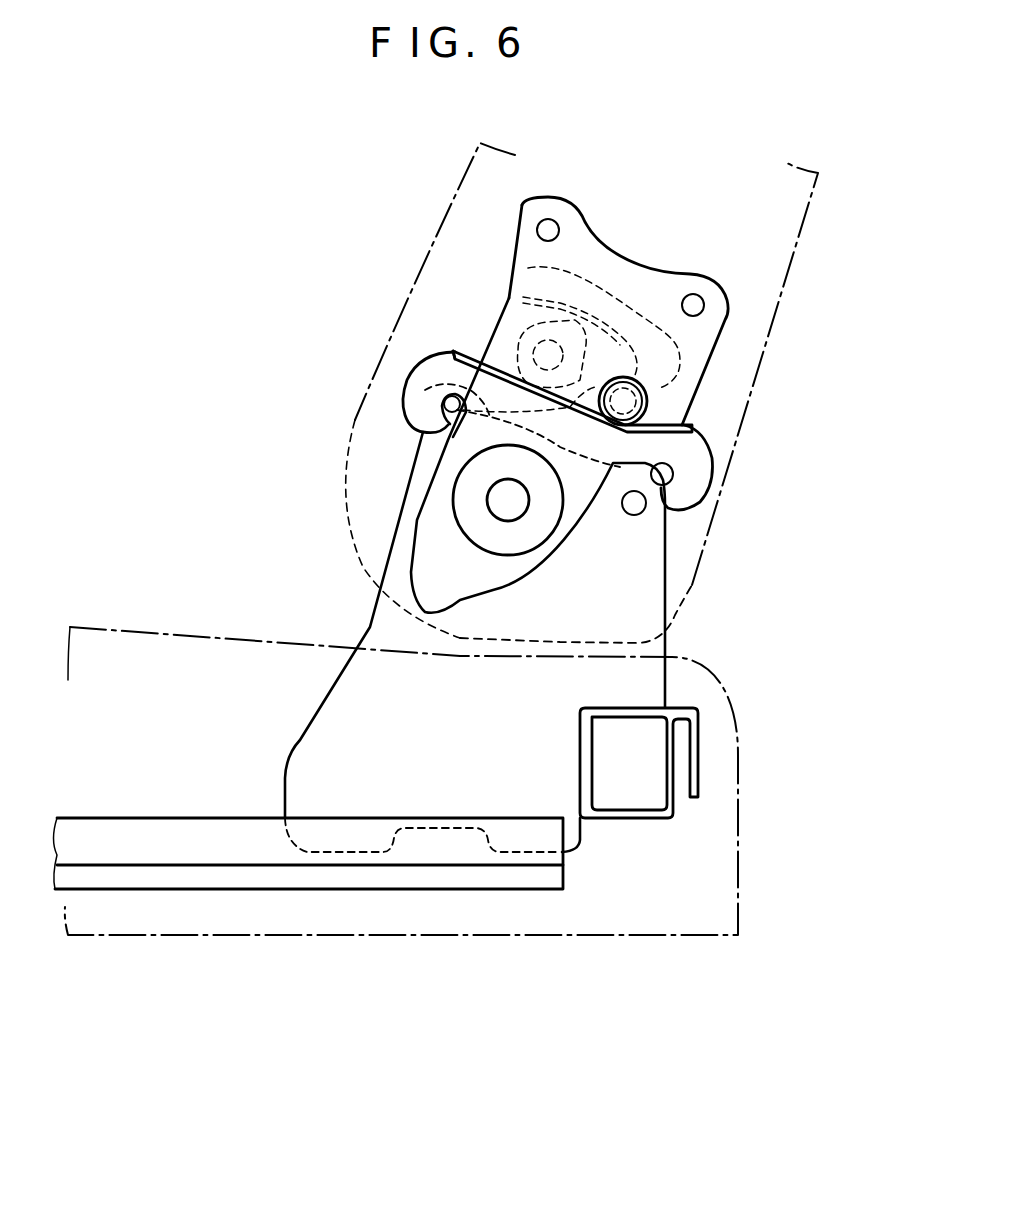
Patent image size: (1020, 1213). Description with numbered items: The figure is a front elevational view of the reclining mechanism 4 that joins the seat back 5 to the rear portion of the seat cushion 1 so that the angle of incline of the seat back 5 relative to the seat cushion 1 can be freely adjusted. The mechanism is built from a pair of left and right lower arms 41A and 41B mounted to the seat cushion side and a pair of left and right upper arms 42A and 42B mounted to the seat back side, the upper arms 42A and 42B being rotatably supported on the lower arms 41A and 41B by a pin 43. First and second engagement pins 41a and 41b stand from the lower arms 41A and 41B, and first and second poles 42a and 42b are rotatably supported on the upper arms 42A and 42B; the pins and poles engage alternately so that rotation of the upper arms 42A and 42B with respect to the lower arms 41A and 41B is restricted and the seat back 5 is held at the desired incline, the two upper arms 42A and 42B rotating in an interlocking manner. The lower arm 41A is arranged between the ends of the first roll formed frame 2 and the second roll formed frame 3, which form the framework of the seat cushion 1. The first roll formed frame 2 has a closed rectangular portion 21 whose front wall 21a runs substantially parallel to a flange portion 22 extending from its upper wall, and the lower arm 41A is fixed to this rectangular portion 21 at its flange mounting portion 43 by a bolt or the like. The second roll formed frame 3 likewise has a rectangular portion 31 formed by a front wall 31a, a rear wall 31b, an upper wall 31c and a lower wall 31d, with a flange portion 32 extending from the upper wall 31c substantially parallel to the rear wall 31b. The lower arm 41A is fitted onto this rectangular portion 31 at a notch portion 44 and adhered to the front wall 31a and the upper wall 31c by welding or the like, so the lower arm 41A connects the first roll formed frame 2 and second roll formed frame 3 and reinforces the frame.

The seat cushion 1 is at (202, 632).
The first roll formed frame 2 is at (141, 817).
The second roll formed frame 3 is at (721, 720).
The reclining mechanism 4 is at (741, 278).
The seat back 5 is at (440, 268).
The rectangular portion 21 is at (290, 907).
The front wall 21a is at (450, 880).
The flange portion 22 is at (187, 847).
The rectangular portion 31 is at (606, 693).
The front wall 31a is at (590, 742).
The rear wall 31b is at (670, 780).
The upper wall 31c is at (640, 707).
The lower wall 31d is at (643, 823).
The flange portion 32 is at (698, 757).
The lower arm 41A is at (378, 628).
The lower arm 41B is at (357, 529).
The first engagement pin 41a is at (450, 413).
The second engagement pin 41b is at (637, 510).
The upper arm 42A is at (693, 330).
The upper arm 42B is at (659, 367).
The first pole 42a is at (420, 385).
The second pole 42b is at (697, 467).
The pin 43 is at (508, 505).
The notch portion 44 is at (581, 780).